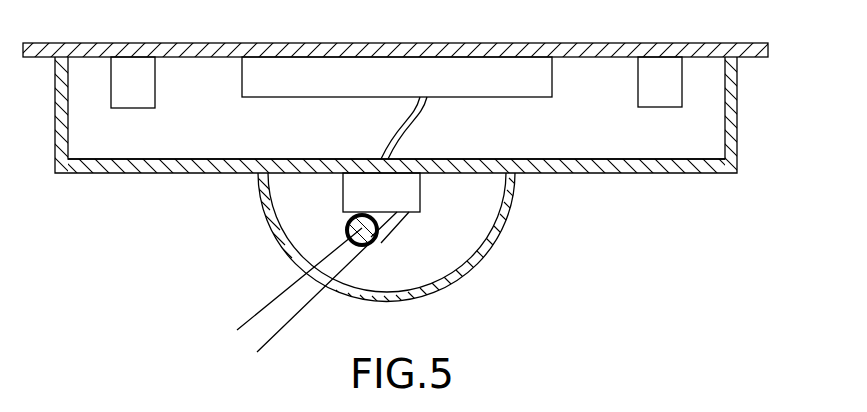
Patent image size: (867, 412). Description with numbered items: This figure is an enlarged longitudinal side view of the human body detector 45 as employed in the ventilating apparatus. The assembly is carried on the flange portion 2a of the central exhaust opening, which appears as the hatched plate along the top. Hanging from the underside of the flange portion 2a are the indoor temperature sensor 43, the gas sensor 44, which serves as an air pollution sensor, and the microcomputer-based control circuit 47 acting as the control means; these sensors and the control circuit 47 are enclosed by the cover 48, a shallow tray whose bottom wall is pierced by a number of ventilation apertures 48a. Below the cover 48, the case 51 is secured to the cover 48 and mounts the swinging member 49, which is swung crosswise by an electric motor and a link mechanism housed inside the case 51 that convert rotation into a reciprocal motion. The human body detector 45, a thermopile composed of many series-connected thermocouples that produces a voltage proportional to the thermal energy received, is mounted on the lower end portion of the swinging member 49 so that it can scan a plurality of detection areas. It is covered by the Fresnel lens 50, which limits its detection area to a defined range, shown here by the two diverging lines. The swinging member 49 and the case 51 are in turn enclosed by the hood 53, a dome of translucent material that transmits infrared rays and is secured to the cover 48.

The flange portion 2a is at (768, 57).
The indoor temperature sensor 43 is at (682, 73).
The gas sensor 44 is at (155, 80).
The human body detector 45 is at (370, 247).
The control circuit 47 is at (552, 78).
The cover 48 is at (737, 150).
The ventilation apertures 48a is at (133, 173).
The swinging member 49 is at (405, 218).
The Fresnel lens 50 is at (345, 222).
The case 51 is at (421, 190).
The hood 53 is at (485, 265).